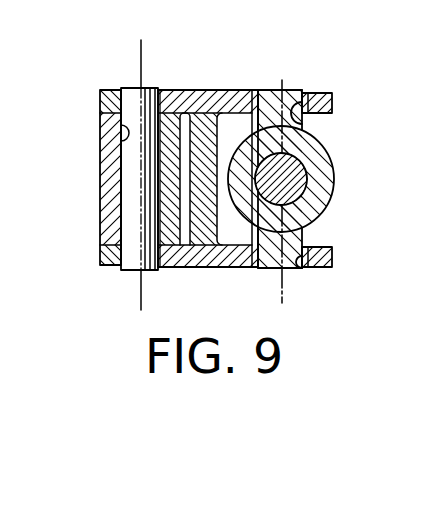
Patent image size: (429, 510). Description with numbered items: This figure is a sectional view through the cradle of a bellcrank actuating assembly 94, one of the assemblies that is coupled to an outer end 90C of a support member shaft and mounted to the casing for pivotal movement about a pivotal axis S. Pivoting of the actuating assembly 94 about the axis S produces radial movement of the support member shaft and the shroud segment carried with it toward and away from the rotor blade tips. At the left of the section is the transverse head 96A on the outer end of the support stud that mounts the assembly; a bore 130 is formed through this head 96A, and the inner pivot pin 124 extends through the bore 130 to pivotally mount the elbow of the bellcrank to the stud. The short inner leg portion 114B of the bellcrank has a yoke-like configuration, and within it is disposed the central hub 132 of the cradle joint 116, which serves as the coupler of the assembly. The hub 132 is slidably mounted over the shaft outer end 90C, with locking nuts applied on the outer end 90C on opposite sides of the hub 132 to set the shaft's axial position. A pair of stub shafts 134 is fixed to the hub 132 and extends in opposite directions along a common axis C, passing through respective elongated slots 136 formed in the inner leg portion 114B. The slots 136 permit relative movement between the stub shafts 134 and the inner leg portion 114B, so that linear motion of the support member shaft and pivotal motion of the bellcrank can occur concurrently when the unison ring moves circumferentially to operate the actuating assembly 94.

The bellcrank actuating assembly 94 is at (191, 81).
The transverse head 96A is at (101, 193).
The inner pivot pin 124 is at (128, 269).
The bore 130 is at (100, 142).
The inner leg portion 114B is at (234, 90).
The stub shafts 134 is at (288, 92).
The elongated slots 136 is at (304, 121).
The cradle joint 116 is at (333, 153).
The central hub 132 is at (328, 196).
The outer end of support member shaft 90C is at (306, 176).
The pivotal axis S is at (139, 60).
The common axis C is at (284, 290).